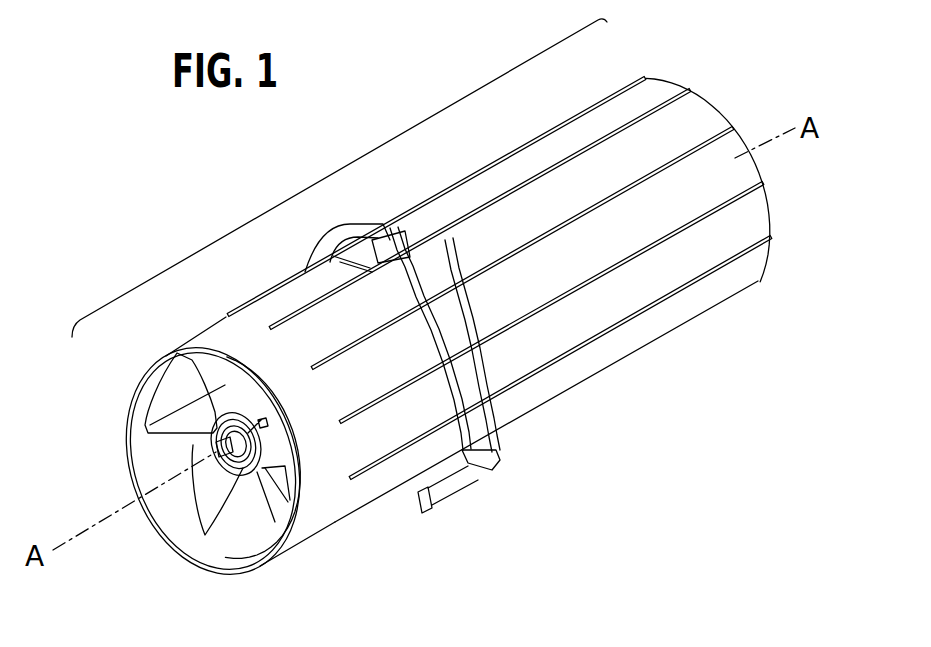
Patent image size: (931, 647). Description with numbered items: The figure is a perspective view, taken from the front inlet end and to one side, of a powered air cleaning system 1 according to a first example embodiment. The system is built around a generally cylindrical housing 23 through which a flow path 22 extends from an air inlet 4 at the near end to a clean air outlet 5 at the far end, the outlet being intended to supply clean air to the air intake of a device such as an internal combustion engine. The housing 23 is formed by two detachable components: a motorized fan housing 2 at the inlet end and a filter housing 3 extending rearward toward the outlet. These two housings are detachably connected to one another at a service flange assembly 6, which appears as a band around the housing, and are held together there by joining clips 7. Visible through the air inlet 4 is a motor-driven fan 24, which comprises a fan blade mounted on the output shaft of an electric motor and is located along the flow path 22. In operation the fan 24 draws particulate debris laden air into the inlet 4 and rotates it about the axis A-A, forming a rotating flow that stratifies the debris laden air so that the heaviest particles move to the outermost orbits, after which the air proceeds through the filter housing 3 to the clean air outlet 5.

The powered air cleaning system 1 is at (312, 176).
The motorized fan housing 2 is at (205, 328).
The filter housing 3 is at (515, 148).
The air inlet 4 is at (218, 548).
The clean air outlet 5 is at (722, 109).
The service flange assembly 6 is at (487, 450).
The joining clips 7 is at (433, 505).
The flow path 22 is at (157, 406).
The housing 23 is at (388, 142).
The motor-driven fan 24 is at (218, 452).